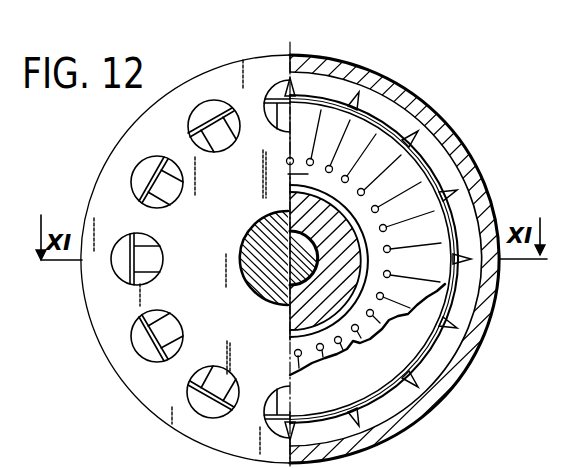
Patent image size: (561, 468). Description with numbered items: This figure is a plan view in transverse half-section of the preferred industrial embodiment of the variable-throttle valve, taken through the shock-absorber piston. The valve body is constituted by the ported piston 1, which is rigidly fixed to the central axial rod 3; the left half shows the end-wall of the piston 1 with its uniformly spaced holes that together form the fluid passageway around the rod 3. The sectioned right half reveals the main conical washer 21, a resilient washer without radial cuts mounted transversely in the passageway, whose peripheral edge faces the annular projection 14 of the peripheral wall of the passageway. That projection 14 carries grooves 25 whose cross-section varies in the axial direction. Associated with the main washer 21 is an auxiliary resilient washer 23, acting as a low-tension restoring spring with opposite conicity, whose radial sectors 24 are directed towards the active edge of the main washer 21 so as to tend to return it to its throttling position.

The ported piston 1 is at (412, 426).
The axial rod 3 is at (268, 265).
The annular projection 14 is at (337, 86).
The conical washer 21 is at (497, 306).
The auxiliary resilient washer 23 is at (353, 343).
The radial sectors 24 is at (400, 192).
The grooves 25 is at (409, 131).